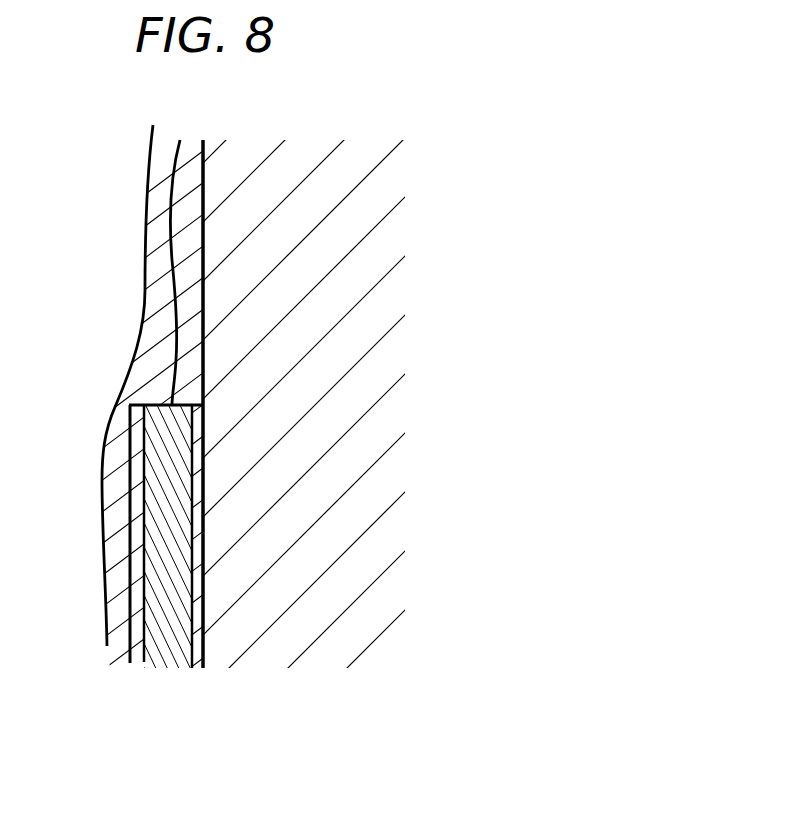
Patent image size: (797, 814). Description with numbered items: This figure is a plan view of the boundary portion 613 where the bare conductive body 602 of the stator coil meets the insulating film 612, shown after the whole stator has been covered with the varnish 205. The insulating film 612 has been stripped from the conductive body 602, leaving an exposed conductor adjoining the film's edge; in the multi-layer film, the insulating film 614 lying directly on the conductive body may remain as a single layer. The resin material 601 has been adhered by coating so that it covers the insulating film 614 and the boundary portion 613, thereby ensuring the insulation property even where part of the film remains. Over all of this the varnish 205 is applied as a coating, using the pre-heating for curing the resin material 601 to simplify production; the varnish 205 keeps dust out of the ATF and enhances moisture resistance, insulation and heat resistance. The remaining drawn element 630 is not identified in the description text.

The varnish 205 is at (107, 477).
The resin material 601 is at (180, 206).
The bare conductive body 602 is at (288, 188).
The insulating film 612 is at (138, 653).
The boundary portion 613 is at (183, 664).
The insulating film on the conductive body 614 is at (203, 666).
The sealing member 630 is at (138, 400).